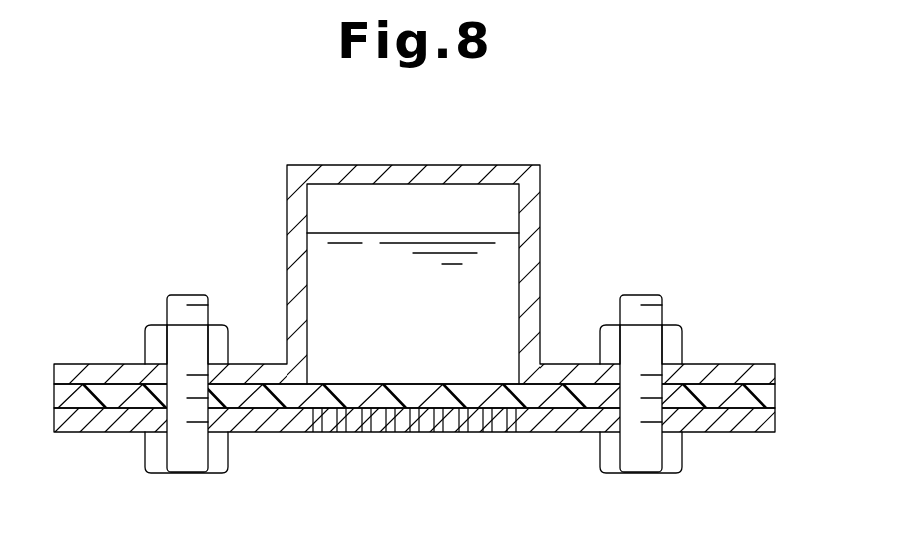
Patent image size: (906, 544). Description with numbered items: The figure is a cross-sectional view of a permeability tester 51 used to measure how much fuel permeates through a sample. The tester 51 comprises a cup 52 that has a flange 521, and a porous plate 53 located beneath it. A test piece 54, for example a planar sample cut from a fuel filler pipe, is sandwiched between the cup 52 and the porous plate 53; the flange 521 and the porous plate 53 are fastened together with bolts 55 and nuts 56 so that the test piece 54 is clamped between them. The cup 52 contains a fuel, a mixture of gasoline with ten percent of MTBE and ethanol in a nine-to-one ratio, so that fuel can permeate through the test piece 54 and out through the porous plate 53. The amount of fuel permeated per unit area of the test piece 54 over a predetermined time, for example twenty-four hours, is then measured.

The permeability tester 51 is at (453, 319).
The cup 52 is at (540, 262).
The flange 521 is at (85, 368).
The porous plate 53 is at (735, 432).
The test piece 54 is at (763, 397).
The bolts 55 is at (222, 455).
The nuts 56 is at (220, 328).